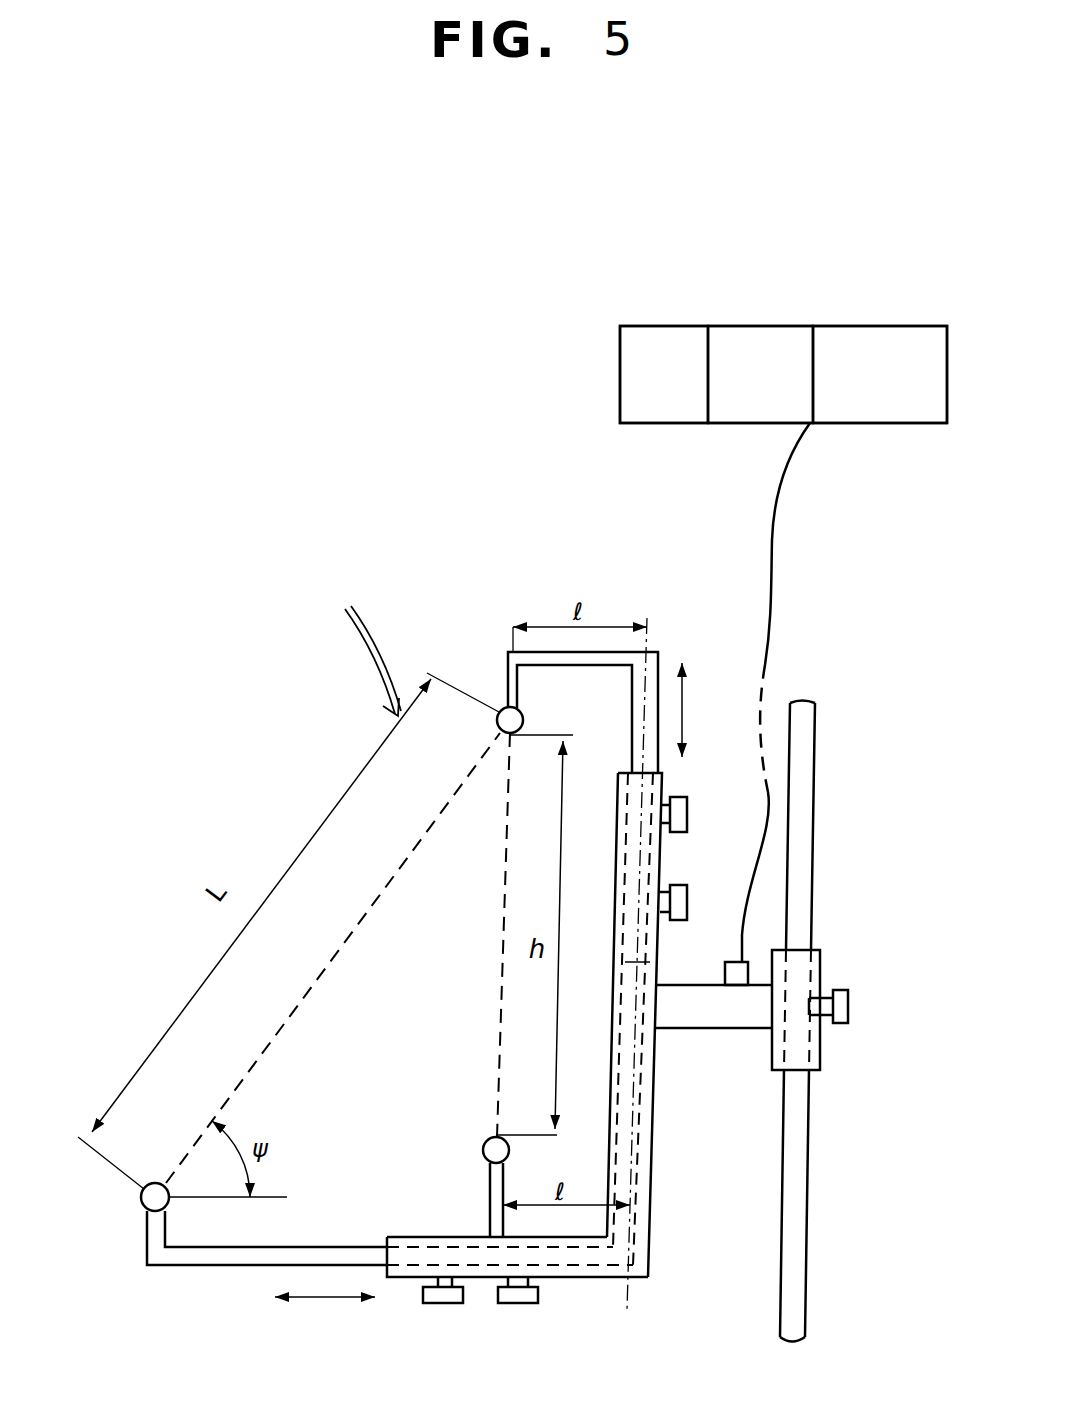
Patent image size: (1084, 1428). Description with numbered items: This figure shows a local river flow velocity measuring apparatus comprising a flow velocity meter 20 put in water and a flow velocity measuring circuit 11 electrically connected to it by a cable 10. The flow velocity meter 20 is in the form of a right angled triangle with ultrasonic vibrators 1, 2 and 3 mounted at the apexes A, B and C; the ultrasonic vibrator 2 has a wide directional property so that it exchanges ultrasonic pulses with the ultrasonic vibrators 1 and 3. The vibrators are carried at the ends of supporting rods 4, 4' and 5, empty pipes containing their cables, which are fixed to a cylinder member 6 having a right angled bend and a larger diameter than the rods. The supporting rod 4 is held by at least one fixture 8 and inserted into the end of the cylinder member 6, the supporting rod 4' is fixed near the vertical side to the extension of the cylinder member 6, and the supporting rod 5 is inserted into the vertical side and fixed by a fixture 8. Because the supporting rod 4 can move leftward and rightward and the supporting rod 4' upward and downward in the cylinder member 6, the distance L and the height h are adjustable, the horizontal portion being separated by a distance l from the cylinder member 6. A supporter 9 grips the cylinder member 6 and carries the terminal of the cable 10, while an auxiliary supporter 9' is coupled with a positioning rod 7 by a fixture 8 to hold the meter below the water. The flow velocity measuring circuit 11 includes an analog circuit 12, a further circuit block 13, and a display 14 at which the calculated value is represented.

The ultrasonic vibrator 1 is at (142, 1207).
The ultrasonic vibrator 2 is at (499, 710).
The ultrasonic vibrator 3 is at (483, 1152).
The supporting rod 4 is at (390, 1268).
The supporting rod 4' is at (467, 1200).
The supporting rod 5 is at (660, 655).
The cylinder member 6 is at (661, 1148).
The positioning rod 7 is at (806, 855).
The fixture 8 is at (687, 890).
The supporter 9 is at (713, 1037).
The auxiliary supporter 9' is at (846, 1010).
The cable 10 is at (773, 572).
The flow velocity measuring circuit 11 is at (606, 352).
The analog circuit 12 is at (852, 341).
The display cell b 13 is at (745, 338).
The display 14 is at (660, 344).
The flow velocity meter 20 is at (368, 632).